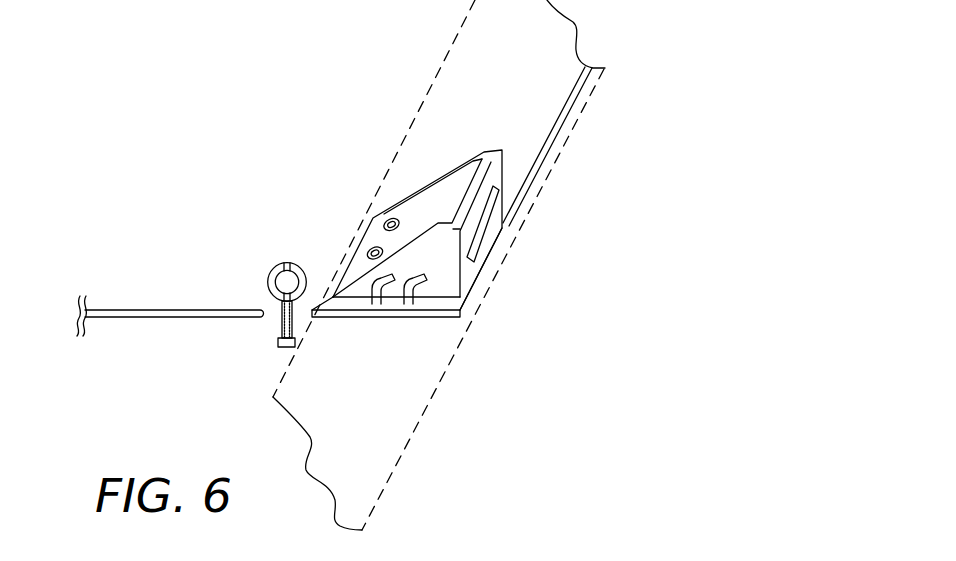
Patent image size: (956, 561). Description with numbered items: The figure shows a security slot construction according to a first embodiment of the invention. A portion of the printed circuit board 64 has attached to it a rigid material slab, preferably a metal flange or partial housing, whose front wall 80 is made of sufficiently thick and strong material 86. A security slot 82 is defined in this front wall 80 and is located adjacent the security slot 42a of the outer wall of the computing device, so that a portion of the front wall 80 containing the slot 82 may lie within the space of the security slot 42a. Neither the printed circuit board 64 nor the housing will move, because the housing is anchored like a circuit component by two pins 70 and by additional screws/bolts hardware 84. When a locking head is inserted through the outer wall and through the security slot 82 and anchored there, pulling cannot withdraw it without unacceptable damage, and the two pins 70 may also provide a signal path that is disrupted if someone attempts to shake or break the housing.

The security slot of the outer wall 42a is at (477, 259).
The printed circuit board 64 is at (550, 43).
The pins 70 is at (439, 265).
The front wall 80 is at (459, 208).
The security slot 82 is at (489, 210).
The screws/bolts hardware 84 is at (383, 218).
The thick and strong material 86 is at (481, 151).